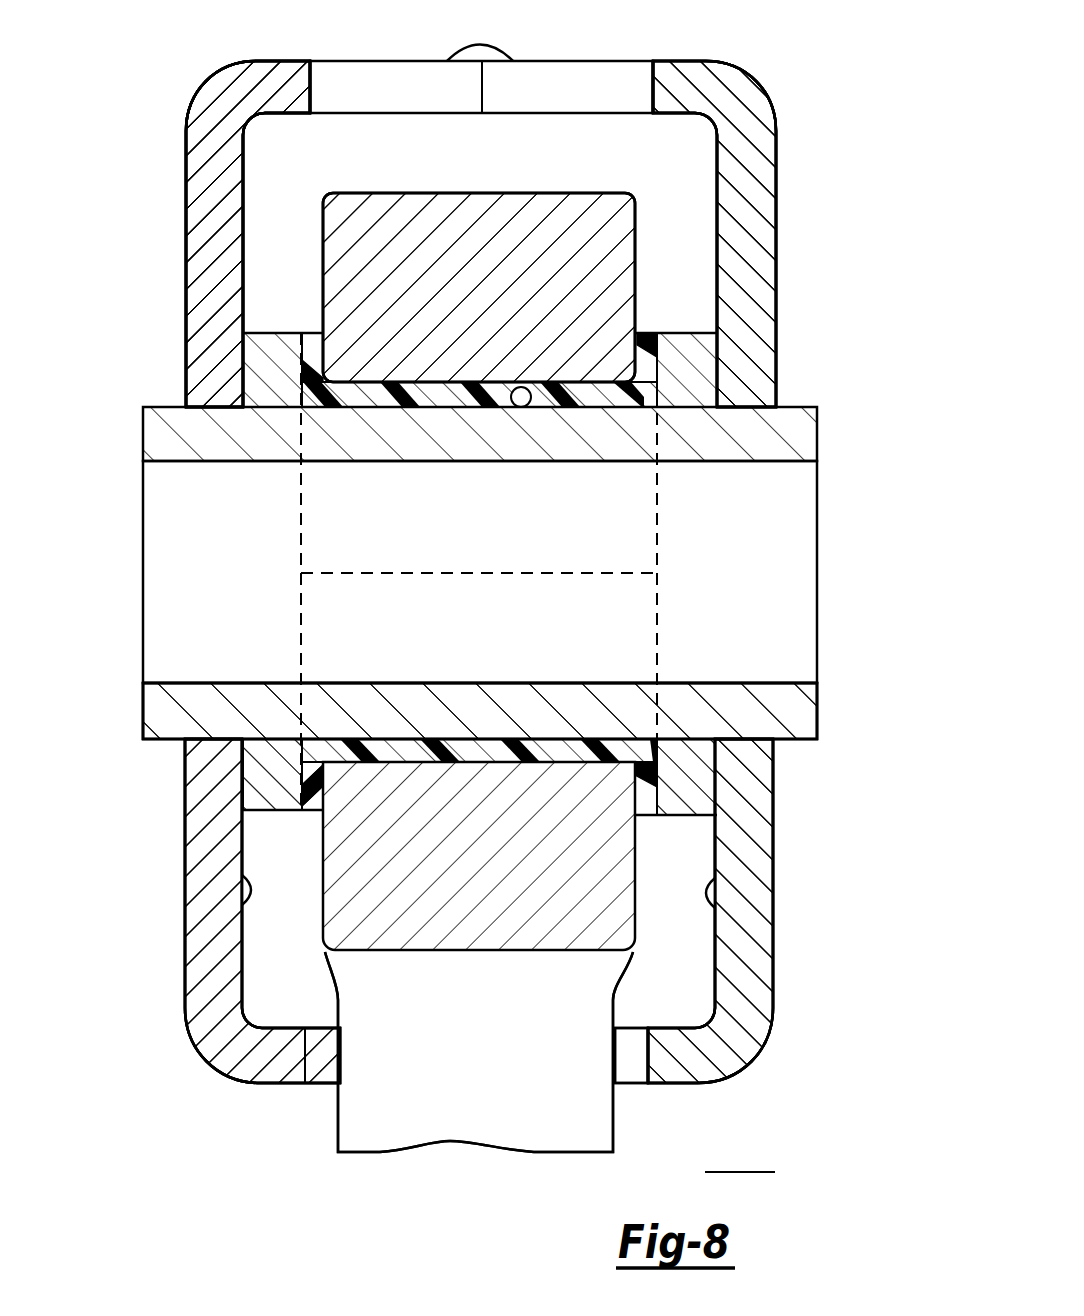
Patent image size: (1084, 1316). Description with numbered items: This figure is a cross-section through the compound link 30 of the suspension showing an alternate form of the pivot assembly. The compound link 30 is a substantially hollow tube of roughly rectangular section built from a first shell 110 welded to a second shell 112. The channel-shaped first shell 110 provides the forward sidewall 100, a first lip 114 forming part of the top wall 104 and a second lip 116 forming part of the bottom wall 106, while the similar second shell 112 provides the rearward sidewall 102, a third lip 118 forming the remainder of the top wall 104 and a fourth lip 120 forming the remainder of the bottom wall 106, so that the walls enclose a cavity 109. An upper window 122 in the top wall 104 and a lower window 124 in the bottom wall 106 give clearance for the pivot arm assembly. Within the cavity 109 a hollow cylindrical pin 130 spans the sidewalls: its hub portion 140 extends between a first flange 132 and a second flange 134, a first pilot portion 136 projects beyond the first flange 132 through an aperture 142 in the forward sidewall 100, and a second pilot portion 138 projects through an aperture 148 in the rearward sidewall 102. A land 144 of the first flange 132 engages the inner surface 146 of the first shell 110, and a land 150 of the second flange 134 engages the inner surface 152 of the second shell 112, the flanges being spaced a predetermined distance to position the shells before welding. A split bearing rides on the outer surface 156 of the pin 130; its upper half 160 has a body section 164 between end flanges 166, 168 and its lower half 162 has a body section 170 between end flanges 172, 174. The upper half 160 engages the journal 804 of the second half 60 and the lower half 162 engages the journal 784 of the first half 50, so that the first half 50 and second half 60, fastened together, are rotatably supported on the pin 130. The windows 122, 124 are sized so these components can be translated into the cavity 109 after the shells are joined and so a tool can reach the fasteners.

The compound link 30 is at (802, 53).
The first half 50 is at (479, 1052).
The second half 60 is at (479, 287).
The forward sidewall 100 is at (778, 350).
The rearward sidewall 102 is at (186, 232).
The top wall 104 is at (352, 60).
The bottom wall 106 is at (630, 1085).
The cavity 109 is at (290, 242).
The first shell 110 is at (780, 297).
The second shell 112 is at (178, 324).
The first lip 114 is at (668, 60).
The second lip 116 is at (675, 1085).
The third lip 118 is at (296, 60).
The fourth lip 120 is at (293, 1085).
The upper window 122 is at (652, 88).
The lower window 124 is at (312, 1045).
The pin 130 is at (838, 436).
The first flange 132 is at (775, 845).
The second flange 134 is at (263, 780).
The first pilot portion 136 is at (793, 710).
The second pilot portion 138 is at (157, 713).
The hub portion 140 is at (508, 690).
The aperture 142 is at (792, 758).
The land 144 is at (772, 800).
The inner surface 146 is at (702, 905).
The aperture 148 is at (208, 740).
The land 150 is at (233, 755).
The inner surface 152 is at (245, 905).
The outer surface 156 is at (520, 407).
The upper half 160 is at (413, 376).
The lower half 162 is at (431, 770).
The body section 164 is at (448, 402).
The first end flange 166 is at (648, 363).
The second end flange 168 is at (312, 355).
The body section 170 is at (563, 748).
The first end flange 172 is at (640, 792).
The second end flange 174 is at (317, 812).
The journal 784 is at (345, 850).
The journal 804 is at (340, 400).